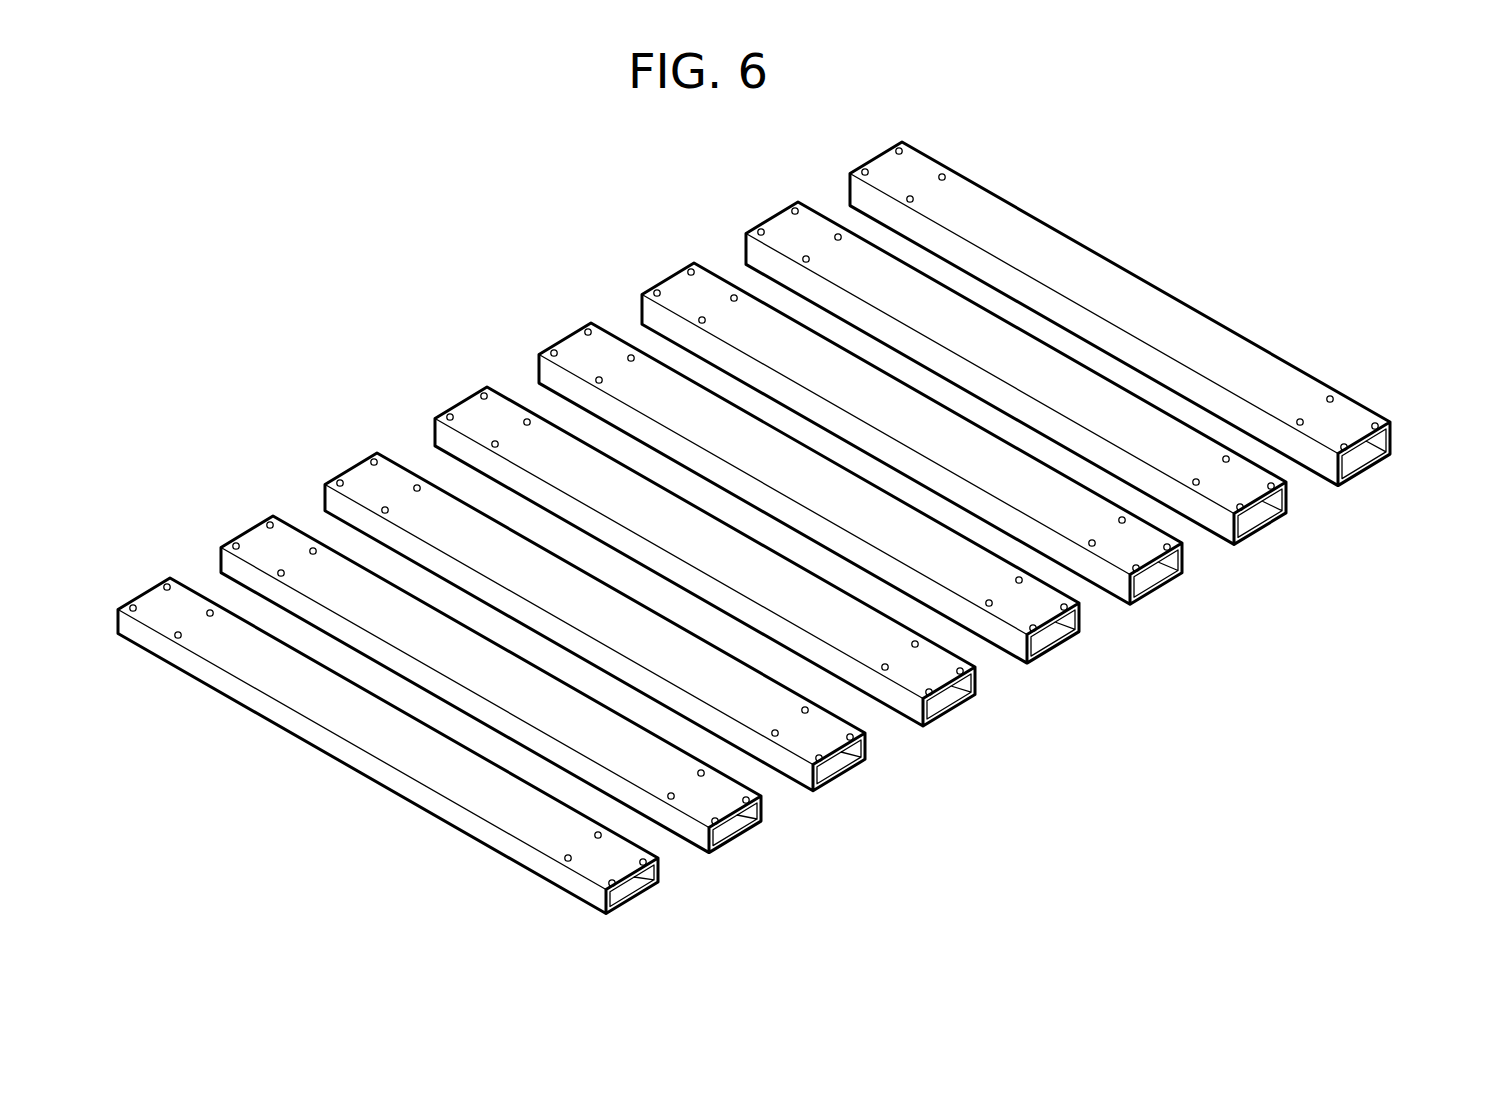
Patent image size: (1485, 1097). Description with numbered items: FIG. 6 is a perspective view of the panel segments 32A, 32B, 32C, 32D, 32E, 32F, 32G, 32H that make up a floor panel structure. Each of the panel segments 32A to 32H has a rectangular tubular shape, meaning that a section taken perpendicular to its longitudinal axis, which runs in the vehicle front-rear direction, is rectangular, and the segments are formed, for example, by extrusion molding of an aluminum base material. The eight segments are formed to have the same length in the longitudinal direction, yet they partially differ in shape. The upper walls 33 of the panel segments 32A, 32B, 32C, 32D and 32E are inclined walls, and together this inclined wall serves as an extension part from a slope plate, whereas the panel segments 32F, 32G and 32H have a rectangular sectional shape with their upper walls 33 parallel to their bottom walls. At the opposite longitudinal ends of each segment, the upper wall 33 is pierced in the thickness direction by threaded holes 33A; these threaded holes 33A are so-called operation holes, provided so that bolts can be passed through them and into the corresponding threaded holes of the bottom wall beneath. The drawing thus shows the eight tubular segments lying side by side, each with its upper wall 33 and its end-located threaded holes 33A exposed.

The panel segment 32A is at (635, 913).
The panel segment 32B is at (738, 852).
The panel segment 32C is at (842, 790).
The panel segment 32D is at (952, 726).
The panel segment 32E is at (1056, 663).
The panel segment 32F is at (1159, 604).
The panel segment 32G is at (1263, 544).
The panel segment 32H is at (1367, 485).
The upper wall 33 is at (787, 527).
The threaded hole 33A is at (183, 636).